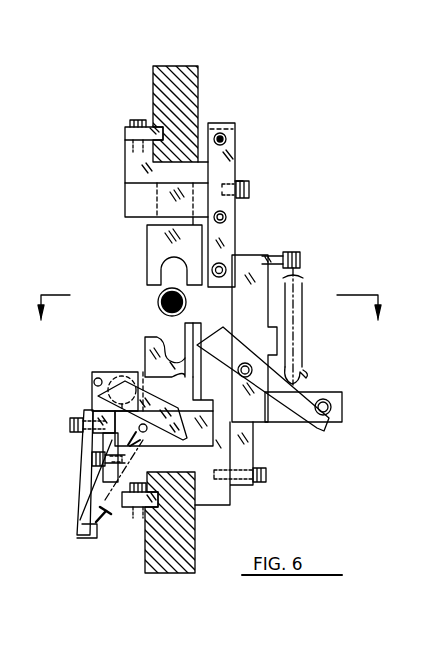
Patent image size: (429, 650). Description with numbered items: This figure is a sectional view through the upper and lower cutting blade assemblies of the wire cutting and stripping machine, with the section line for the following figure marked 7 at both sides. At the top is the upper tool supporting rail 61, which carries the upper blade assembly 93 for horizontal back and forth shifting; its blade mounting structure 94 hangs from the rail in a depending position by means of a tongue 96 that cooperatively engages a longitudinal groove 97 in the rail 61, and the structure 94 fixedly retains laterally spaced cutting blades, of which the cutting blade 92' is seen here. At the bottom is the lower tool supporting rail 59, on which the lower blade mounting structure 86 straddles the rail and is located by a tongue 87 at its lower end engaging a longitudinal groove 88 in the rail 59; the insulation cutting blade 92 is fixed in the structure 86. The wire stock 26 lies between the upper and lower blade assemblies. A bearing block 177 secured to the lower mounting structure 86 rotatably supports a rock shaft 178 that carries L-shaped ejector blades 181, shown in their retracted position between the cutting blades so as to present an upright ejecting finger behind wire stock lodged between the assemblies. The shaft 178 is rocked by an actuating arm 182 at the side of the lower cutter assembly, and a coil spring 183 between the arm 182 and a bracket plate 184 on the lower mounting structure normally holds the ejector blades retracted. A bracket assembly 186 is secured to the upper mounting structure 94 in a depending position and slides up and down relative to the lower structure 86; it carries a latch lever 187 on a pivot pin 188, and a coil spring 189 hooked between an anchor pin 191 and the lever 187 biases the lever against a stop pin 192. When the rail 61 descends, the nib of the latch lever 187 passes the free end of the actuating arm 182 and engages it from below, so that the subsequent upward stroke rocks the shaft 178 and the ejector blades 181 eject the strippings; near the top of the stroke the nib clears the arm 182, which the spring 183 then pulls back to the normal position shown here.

The upper tool supporting rail 61 is at (195, 83).
The longitudinal groove 97 is at (152, 127).
The tongue 96 is at (130, 129).
The blade mounting structure 94 is at (128, 163).
The upper blade assembly 93 is at (122, 200).
The cutting blade 92' is at (151, 251).
The wire stock 26 is at (157, 301).
The insulation cutting blade 92 is at (157, 347).
The L-shaped ejector blades 181 is at (185, 383).
The pivot pin 188 is at (244, 362).
The bracket assembly 186 is at (275, 239).
The anchor pin 191 is at (303, 262).
The coil spring 189 is at (302, 288).
The latch lever 187 is at (302, 412).
The stop pin 192 is at (342, 404).
The blade mounting structure 86 is at (226, 497).
The actuating arm 182 is at (92, 391).
The bearing block 177 is at (95, 372).
The rock shaft 178 is at (120, 368).
The bracket plate 184 is at (80, 459).
The coil spring 183 is at (95, 512).
The tongue 87 is at (105, 508).
The longitudinal groove 88 is at (148, 507).
The lower tool supporting rail 59 is at (190, 556).
The section line 7- 7 is at (210, 319).